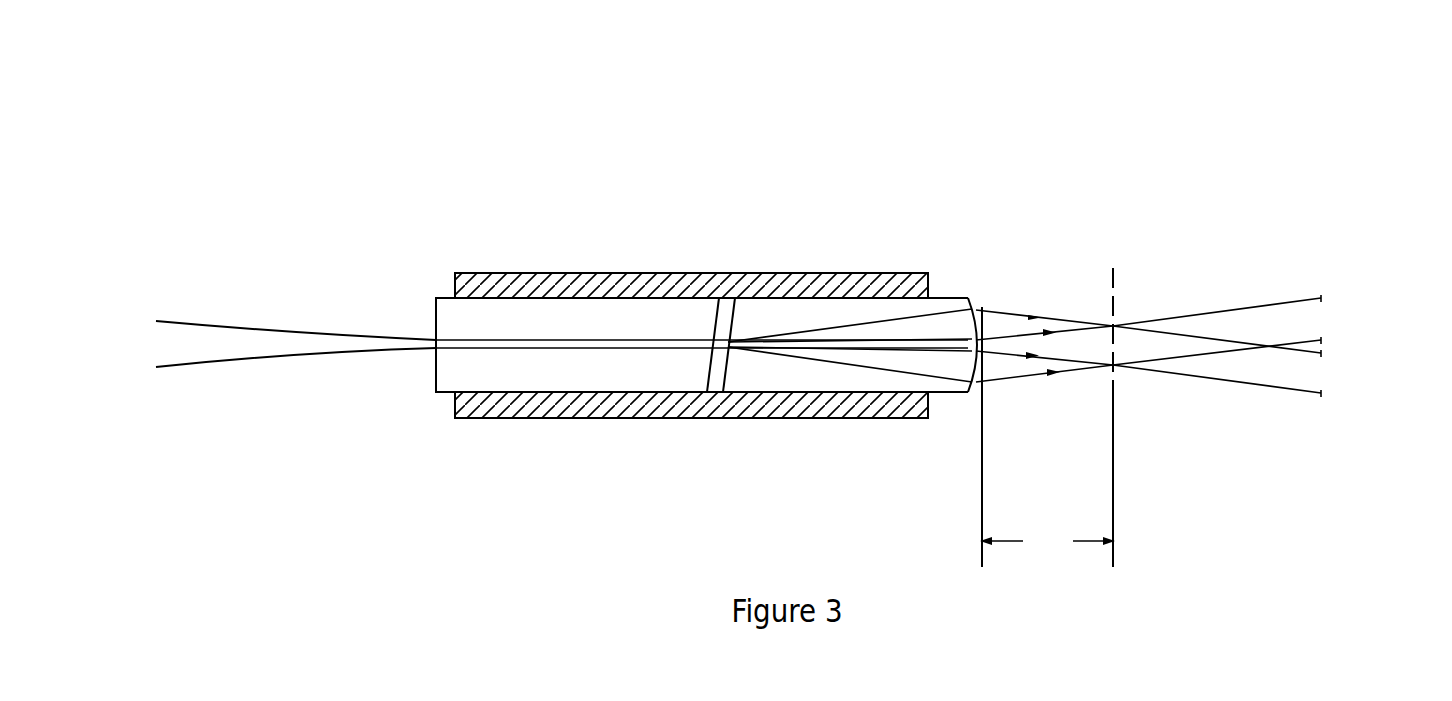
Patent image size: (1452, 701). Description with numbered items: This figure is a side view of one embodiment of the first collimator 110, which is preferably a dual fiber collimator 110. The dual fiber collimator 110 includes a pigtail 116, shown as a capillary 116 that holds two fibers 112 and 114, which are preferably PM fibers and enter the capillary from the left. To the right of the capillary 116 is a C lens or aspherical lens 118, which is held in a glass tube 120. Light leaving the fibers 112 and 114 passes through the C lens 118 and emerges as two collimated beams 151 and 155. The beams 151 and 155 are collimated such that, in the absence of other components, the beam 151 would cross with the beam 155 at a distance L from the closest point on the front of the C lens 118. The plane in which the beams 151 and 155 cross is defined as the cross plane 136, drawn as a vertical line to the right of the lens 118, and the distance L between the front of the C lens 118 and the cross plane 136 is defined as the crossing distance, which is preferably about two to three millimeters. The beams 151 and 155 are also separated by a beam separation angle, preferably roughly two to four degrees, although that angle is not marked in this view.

The first collimator 110 is at (748, 45).
The fiber 112 is at (290, 332).
The fiber 114 is at (300, 350).
The pigtail 116 is at (436, 392).
The C lens 118 is at (969, 303).
The glass tube 120 is at (725, 272).
The cross plane 136 is at (1105, 292).
The beam 151 is at (1329, 298).
The beam 155 is at (1329, 354).